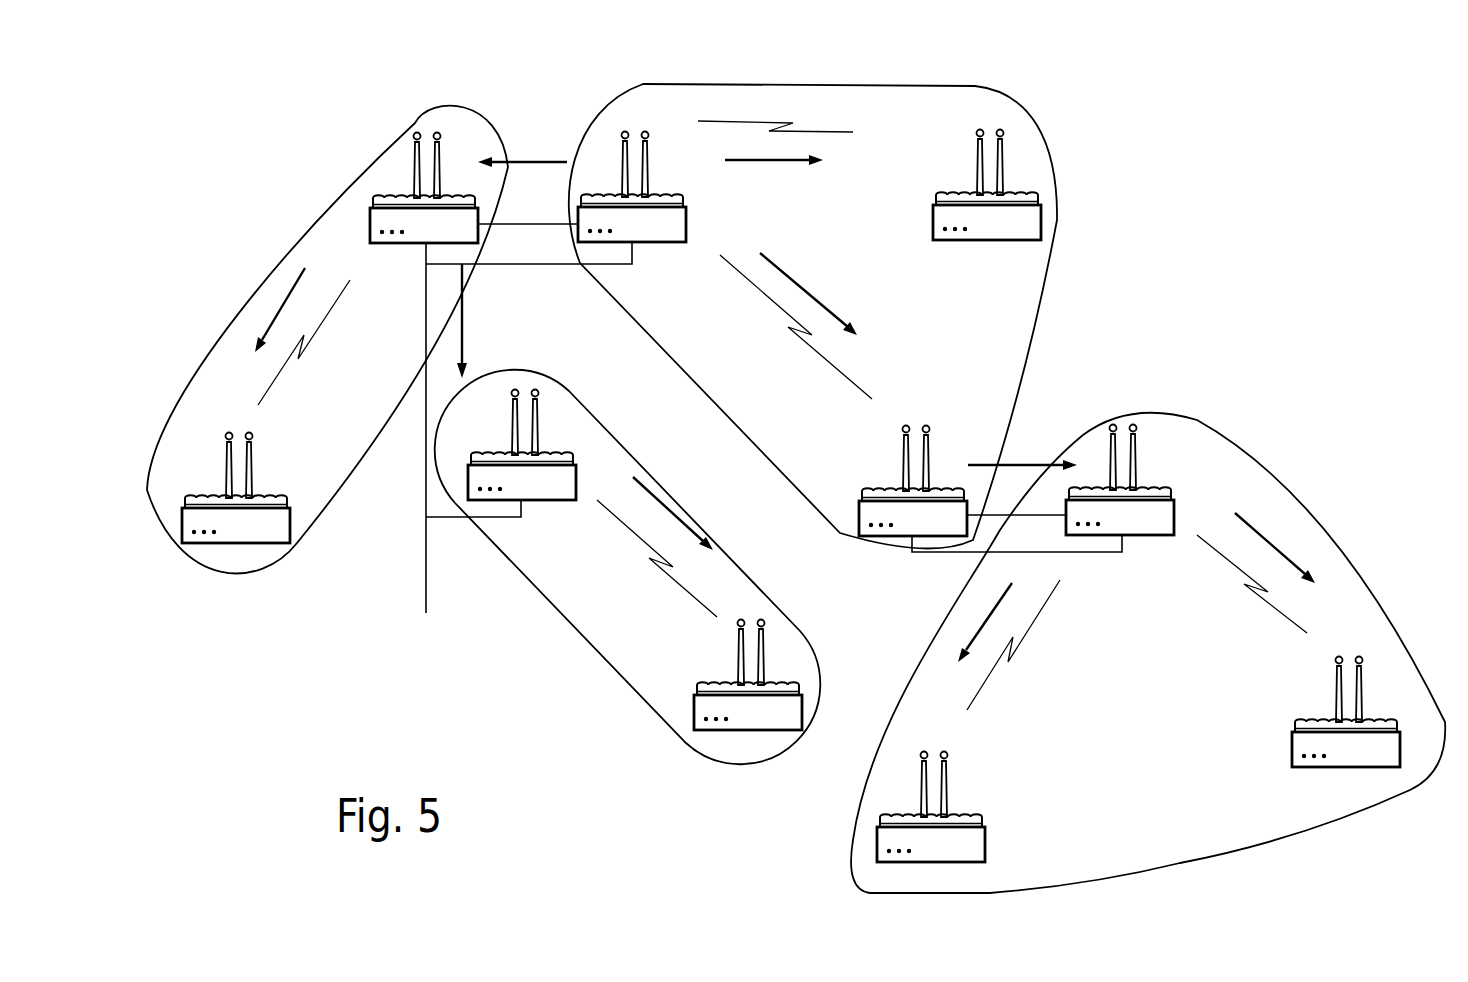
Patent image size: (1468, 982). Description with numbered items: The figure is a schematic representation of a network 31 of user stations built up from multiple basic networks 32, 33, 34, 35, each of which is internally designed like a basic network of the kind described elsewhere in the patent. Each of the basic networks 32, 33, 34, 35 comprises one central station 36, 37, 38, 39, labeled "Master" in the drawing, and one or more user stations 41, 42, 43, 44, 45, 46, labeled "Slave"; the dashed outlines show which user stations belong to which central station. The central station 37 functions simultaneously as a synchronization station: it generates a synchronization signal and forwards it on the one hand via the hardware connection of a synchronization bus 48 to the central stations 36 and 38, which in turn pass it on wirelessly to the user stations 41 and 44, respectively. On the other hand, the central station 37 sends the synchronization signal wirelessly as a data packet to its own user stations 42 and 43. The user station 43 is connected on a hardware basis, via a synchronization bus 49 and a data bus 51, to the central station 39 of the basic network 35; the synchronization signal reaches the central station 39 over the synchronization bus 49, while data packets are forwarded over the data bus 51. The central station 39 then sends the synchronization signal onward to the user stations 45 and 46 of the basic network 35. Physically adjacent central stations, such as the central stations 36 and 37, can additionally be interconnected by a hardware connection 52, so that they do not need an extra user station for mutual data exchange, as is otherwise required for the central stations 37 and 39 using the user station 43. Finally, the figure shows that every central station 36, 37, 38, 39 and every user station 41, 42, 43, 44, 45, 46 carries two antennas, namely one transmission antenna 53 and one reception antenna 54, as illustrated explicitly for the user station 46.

The network 31 is at (1276, 111).
The basic network 32 is at (227, 323).
The basic network 33 is at (1038, 298).
The basic network 34 is at (587, 652).
The basic network 35 is at (1265, 472).
The central station 36 is at (388, 183).
The central station 37 is at (660, 192).
The central station 38 is at (538, 503).
The central station 39 is at (1158, 490).
The user station 41 is at (240, 545).
The user station 42 is at (1043, 190).
The user station 43 is at (940, 492).
The user station 44 is at (740, 732).
The user station 45 is at (925, 863).
The user station 46 is at (1366, 709).
The synchronization bus 48 is at (425, 393).
The synchronization bus 49 is at (950, 548).
The data bus 51 is at (1010, 513).
The hardware connection 52 is at (515, 220).
The transmission antenna 53 is at (1348, 647).
The reception antenna 54 is at (1367, 670).